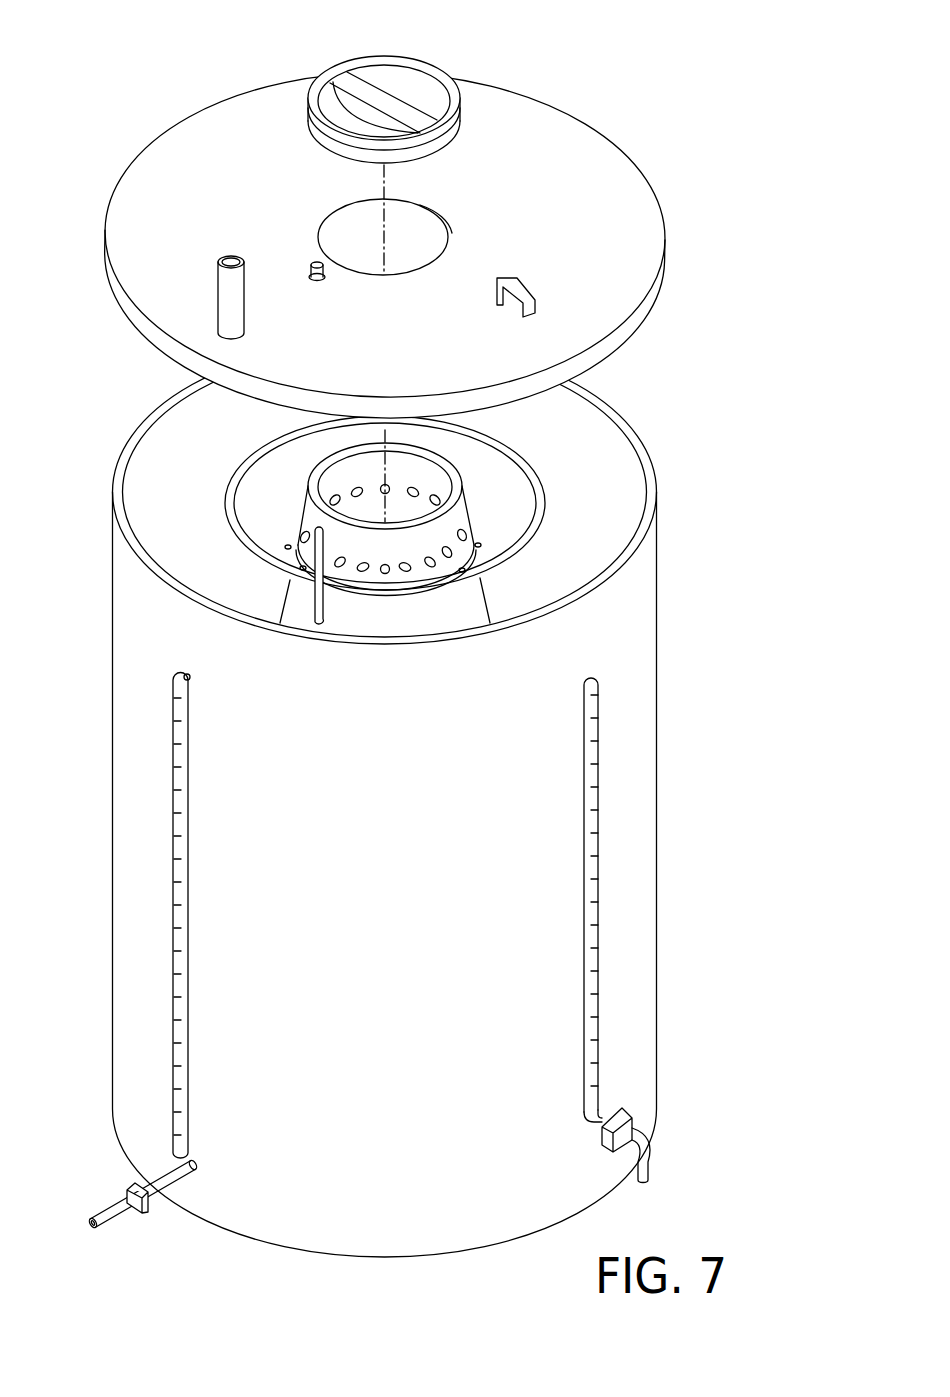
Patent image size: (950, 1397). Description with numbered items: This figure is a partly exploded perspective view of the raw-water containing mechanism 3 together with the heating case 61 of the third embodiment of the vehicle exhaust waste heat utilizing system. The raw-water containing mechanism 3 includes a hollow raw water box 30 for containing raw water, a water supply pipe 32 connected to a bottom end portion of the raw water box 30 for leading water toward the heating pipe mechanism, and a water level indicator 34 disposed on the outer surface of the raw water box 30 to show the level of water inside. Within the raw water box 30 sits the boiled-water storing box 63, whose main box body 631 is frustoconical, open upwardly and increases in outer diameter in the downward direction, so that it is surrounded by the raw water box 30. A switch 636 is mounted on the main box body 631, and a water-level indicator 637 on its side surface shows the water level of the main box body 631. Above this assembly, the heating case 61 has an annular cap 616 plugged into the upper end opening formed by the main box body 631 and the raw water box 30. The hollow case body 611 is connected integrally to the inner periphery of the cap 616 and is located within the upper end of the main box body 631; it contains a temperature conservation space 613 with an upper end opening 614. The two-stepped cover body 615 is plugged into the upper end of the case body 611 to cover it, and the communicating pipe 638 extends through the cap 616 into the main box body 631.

The raw-water containing mechanism 3 is at (344, 798).
The raw water box 30 is at (140, 627).
The water supply pipe 32 is at (172, 1180).
The water level indicator 34 is at (182, 792).
The heating case 61 is at (391, 216).
The case body 611 is at (330, 233).
The temperature conservation space 613 is at (452, 233).
The upper end opening 614 is at (418, 217).
The cover body 615 is at (452, 93).
The annular cap 616 is at (277, 107).
The boiled-water storing box 63 is at (387, 774).
The main box body 631 is at (452, 473).
The switch 636 is at (642, 1157).
The water-level indicator 637 is at (598, 917).
The communicating pipe 638 is at (315, 605).